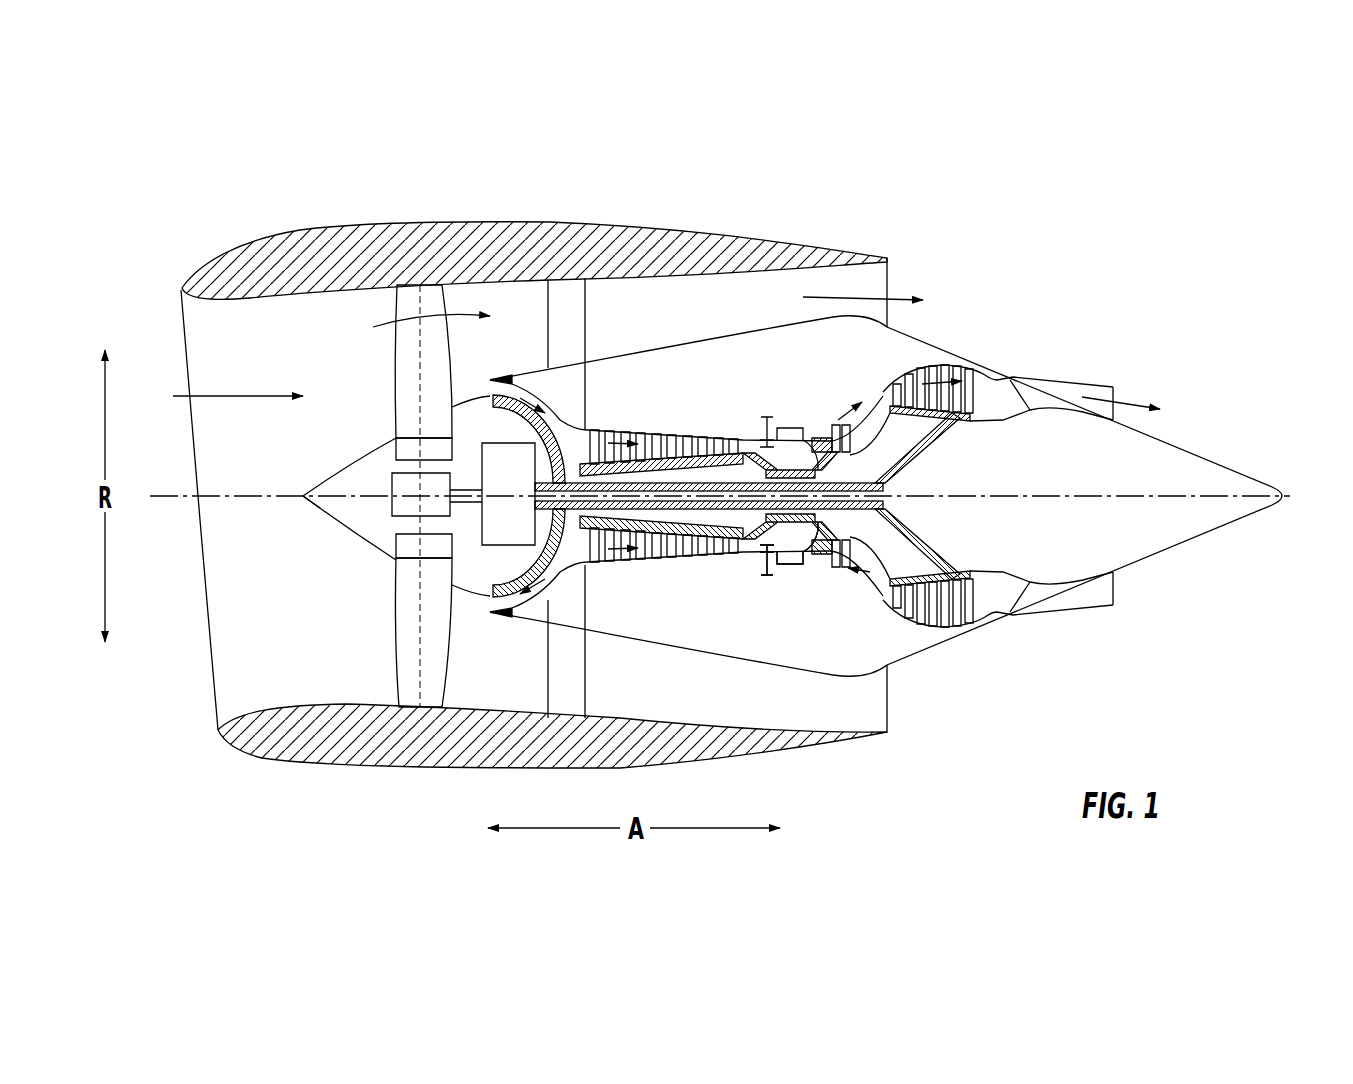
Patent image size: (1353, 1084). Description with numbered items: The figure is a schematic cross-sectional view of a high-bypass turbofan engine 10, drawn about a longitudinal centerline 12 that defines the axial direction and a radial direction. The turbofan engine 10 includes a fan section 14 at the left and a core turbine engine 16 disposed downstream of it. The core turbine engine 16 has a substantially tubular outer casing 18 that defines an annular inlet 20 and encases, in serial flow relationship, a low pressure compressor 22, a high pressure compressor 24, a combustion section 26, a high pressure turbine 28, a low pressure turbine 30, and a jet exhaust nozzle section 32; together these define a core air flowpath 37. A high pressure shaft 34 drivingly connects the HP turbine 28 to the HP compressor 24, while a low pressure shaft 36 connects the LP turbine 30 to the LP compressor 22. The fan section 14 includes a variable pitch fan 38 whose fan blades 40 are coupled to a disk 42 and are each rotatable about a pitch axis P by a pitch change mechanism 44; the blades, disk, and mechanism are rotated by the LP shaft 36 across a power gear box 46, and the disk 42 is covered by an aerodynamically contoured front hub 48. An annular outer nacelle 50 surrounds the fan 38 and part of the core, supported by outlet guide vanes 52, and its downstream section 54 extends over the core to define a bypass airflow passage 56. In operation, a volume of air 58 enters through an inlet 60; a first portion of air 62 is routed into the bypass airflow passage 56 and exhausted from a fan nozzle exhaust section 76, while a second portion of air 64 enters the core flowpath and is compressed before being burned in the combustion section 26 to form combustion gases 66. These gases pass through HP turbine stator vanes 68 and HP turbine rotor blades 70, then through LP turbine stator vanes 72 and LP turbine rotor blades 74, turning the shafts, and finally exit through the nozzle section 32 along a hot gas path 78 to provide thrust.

The turbofan engine 10 is at (1030, 240).
The longitudinal centerline 12 is at (1053, 493).
The fan section 14 is at (352, 307).
The core turbine engine 16 is at (705, 380).
The outer casing 18 is at (743, 660).
The annular inlet 20 is at (492, 602).
The low pressure compressor 22 is at (558, 548).
The high pressure compressor 24 is at (615, 552).
The combustion section 26 is at (787, 561).
The high pressure turbine 28 is at (853, 573).
The low pressure turbine 30 is at (970, 633).
The jet exhaust nozzle section 32 is at (1033, 607).
The high pressure shaft 34 is at (790, 470).
The low pressure shaft 36 is at (913, 458).
The core air flowpath 37 is at (583, 560).
The variable pitch fan 38 is at (360, 547).
The fan blades 40 is at (393, 647).
The disk 42 is at (397, 442).
The pitch change mechanism 44 is at (393, 440).
The power gear box 46 is at (573, 433).
The front hub 48 is at (317, 511).
The outer nacelle 50 is at (442, 768).
The outlet guide vanes 52 is at (587, 307).
The downstream section 54 is at (828, 255).
The bypass airflow passage 56 is at (735, 316).
The volume of air 58 is at (237, 393).
The inlet 60 is at (217, 712).
The first portion of air 62 is at (848, 298).
The second portion of air 64 is at (468, 388).
The combustion gases 66 is at (928, 377).
The HP turbine stator vanes 68 is at (807, 565).
The HP turbine rotor blades 70 is at (837, 543).
The LP turbine stator vanes 72 is at (893, 610).
The LP turbine rotor blades 74 is at (903, 613).
The fan nozzle exhaust section 76 is at (877, 280).
The hot gas path 78 is at (870, 397).
The pitch axis P is at (421, 303).